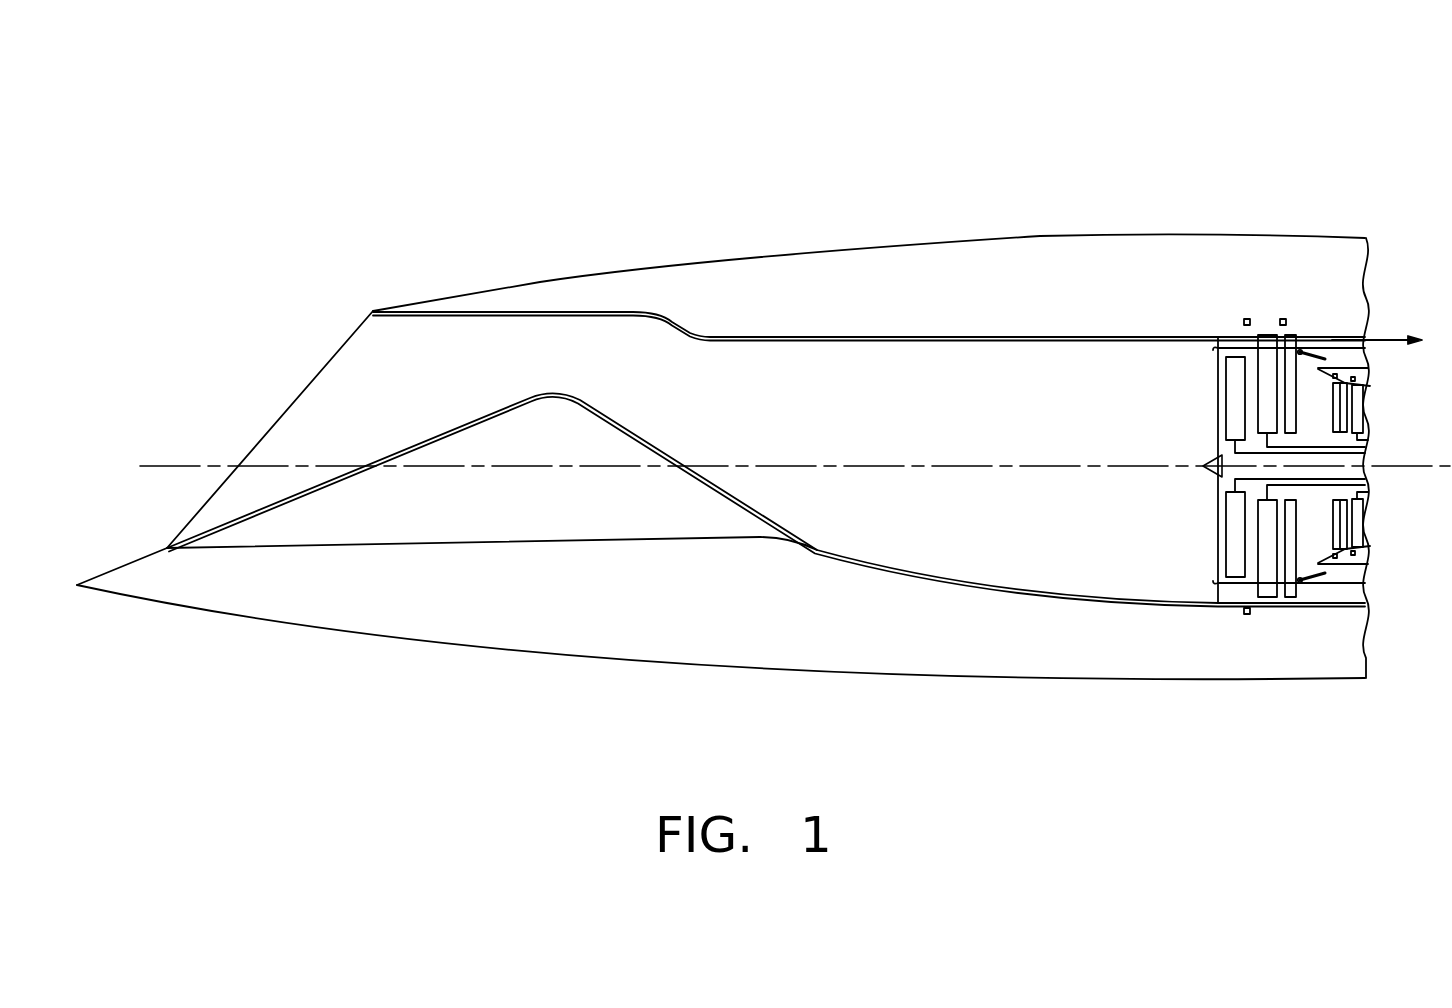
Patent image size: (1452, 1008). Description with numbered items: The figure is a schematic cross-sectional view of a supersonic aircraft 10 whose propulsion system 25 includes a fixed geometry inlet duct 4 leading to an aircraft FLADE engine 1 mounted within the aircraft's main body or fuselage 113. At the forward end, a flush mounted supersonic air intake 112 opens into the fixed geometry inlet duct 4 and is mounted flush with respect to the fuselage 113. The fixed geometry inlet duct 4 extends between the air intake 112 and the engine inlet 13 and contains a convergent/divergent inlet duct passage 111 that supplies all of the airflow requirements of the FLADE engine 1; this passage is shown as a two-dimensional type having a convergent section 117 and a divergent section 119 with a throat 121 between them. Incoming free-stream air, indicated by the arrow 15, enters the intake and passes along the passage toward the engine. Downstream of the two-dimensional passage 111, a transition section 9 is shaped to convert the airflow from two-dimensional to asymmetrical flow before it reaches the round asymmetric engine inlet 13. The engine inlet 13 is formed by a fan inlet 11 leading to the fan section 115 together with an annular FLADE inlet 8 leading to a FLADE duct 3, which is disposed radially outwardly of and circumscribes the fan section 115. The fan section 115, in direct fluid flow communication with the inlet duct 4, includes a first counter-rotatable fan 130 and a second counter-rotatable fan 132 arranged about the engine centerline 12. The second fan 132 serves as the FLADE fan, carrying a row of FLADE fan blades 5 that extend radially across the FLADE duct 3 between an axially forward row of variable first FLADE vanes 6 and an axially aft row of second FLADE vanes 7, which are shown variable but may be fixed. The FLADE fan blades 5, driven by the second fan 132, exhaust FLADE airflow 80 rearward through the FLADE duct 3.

The FLADE engine 1 is at (1345, 328).
The FLADE duct 3 is at (1328, 337).
The fixed geometry inlet duct 4 is at (798, 337).
The FLADE fan blades 5 is at (1270, 337).
The first FLADE vanes 6 is at (1247, 335).
The second FLADE vanes 7 is at (1297, 337).
The FLADE inlet 8 is at (1218, 333).
The transition section 9 is at (973, 370).
The supersonic aircraft 10 is at (1071, 132).
The fan inlet 11 is at (1218, 410).
The centerline 12 is at (937, 465).
The engine inlet 13 is at (1203, 367).
The free stream airflow 15 is at (403, 400).
The propulsion system 25 is at (915, 605).
The FLADE airflow 80 is at (1377, 343).
The convergent/divergent inlet duct passage 111 is at (912, 412).
The supersonic air intake 112 is at (353, 333).
The fuselage 113 is at (927, 677).
The fan section 115 is at (1253, 615).
The convergent section 117 is at (437, 365).
The divergent section 119 is at (653, 368).
The throat 121 is at (558, 342).
The first counter-rotatable fan 130 is at (1237, 515).
The second counter-rotatable fan 132 is at (1268, 548).